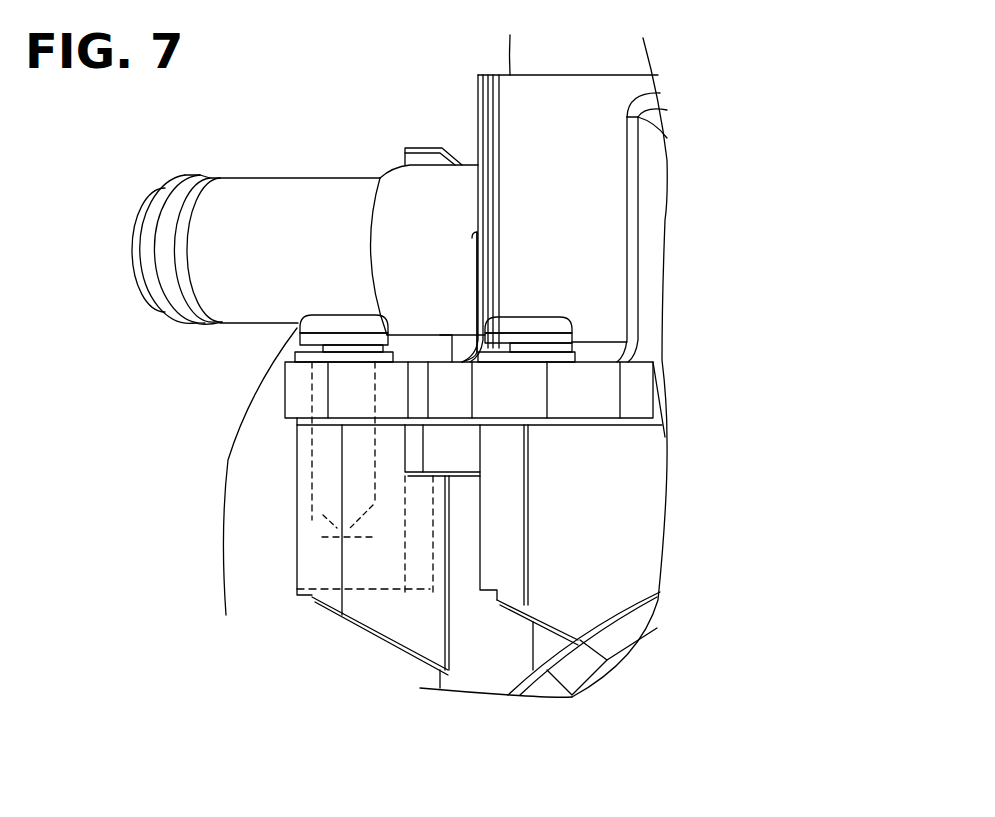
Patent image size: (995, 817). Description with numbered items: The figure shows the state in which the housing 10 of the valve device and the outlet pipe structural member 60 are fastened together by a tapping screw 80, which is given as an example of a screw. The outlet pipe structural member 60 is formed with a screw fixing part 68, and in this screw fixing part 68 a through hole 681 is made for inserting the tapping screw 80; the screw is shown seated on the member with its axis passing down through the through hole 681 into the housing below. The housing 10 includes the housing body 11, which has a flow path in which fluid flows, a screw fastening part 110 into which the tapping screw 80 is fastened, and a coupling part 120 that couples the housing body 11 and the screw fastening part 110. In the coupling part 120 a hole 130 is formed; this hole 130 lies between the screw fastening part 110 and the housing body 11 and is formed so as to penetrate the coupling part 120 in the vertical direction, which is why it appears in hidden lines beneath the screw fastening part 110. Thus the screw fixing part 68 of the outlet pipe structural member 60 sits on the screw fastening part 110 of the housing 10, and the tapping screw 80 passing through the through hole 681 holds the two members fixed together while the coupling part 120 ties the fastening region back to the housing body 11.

The housing 10 is at (297, 484).
The housing body 11 is at (477, 618).
The outlet pipe structural member 60 is at (283, 384).
The screw fixing part 68 is at (285, 402).
The tapping screw 80 is at (336, 318).
The through hole 681 is at (341, 318).
The screw fastening part 110 is at (297, 520).
The coupling part 120 is at (393, 508).
The hole 130 is at (425, 597).